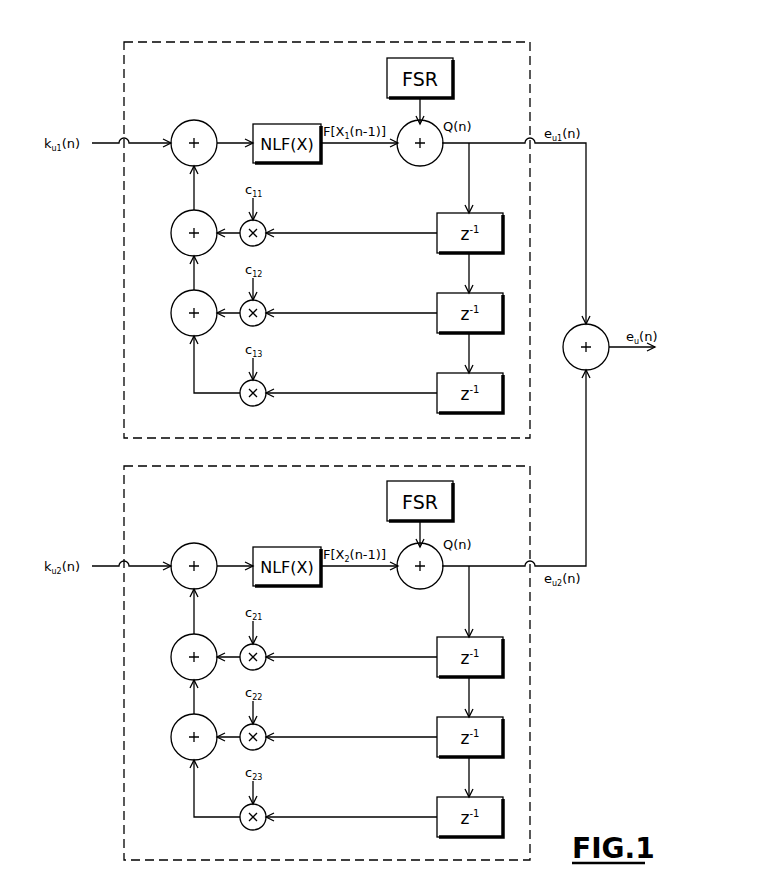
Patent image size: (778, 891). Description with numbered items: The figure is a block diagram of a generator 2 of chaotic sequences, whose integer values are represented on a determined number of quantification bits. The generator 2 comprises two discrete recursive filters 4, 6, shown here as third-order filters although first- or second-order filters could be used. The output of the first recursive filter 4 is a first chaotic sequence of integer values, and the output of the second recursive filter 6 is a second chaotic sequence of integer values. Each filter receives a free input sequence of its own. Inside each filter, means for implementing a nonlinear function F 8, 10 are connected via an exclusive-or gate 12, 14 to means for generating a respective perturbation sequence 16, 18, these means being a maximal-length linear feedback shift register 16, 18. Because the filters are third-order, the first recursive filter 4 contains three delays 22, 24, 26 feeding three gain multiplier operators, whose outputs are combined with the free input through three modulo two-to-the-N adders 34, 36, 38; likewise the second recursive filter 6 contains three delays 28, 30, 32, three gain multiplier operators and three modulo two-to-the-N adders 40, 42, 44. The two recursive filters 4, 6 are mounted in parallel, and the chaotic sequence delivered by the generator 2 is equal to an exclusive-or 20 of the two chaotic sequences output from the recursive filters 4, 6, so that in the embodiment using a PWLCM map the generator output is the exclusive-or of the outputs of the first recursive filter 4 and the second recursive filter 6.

The generator 2 is at (566, 77).
The first recursive filter 4 is at (493, 42).
The second recursive filter 6 is at (530, 466).
The means for implementing a nonlinear function F 8 is at (288, 124).
The means for implementing a nonlinear function F 10 is at (288, 547).
The exclusive-or gate 12 is at (402, 160).
The exclusive-or gate 14 is at (402, 583).
The maximal-length linear feedback shift register 16 is at (455, 74).
The maximal-length linear feedback shift register 18 is at (455, 497).
The exclusive-or 20 is at (604, 362).
The delay 22 is at (492, 213).
The delay 24 is at (492, 293).
The delay 26 is at (492, 373).
The delay 28 is at (492, 637).
The delay 30 is at (492, 717).
The delay 32 is at (492, 797).
The modulo 2^N adder 34 is at (182, 152).
The modulo 2^N adder 36 is at (182, 246).
The modulo 2^N adder 38 is at (182, 326).
The modulo 2^N adder 40 is at (182, 575).
The modulo 2^N adder 42 is at (182, 670).
The modulo 2^N adder 44 is at (182, 750).